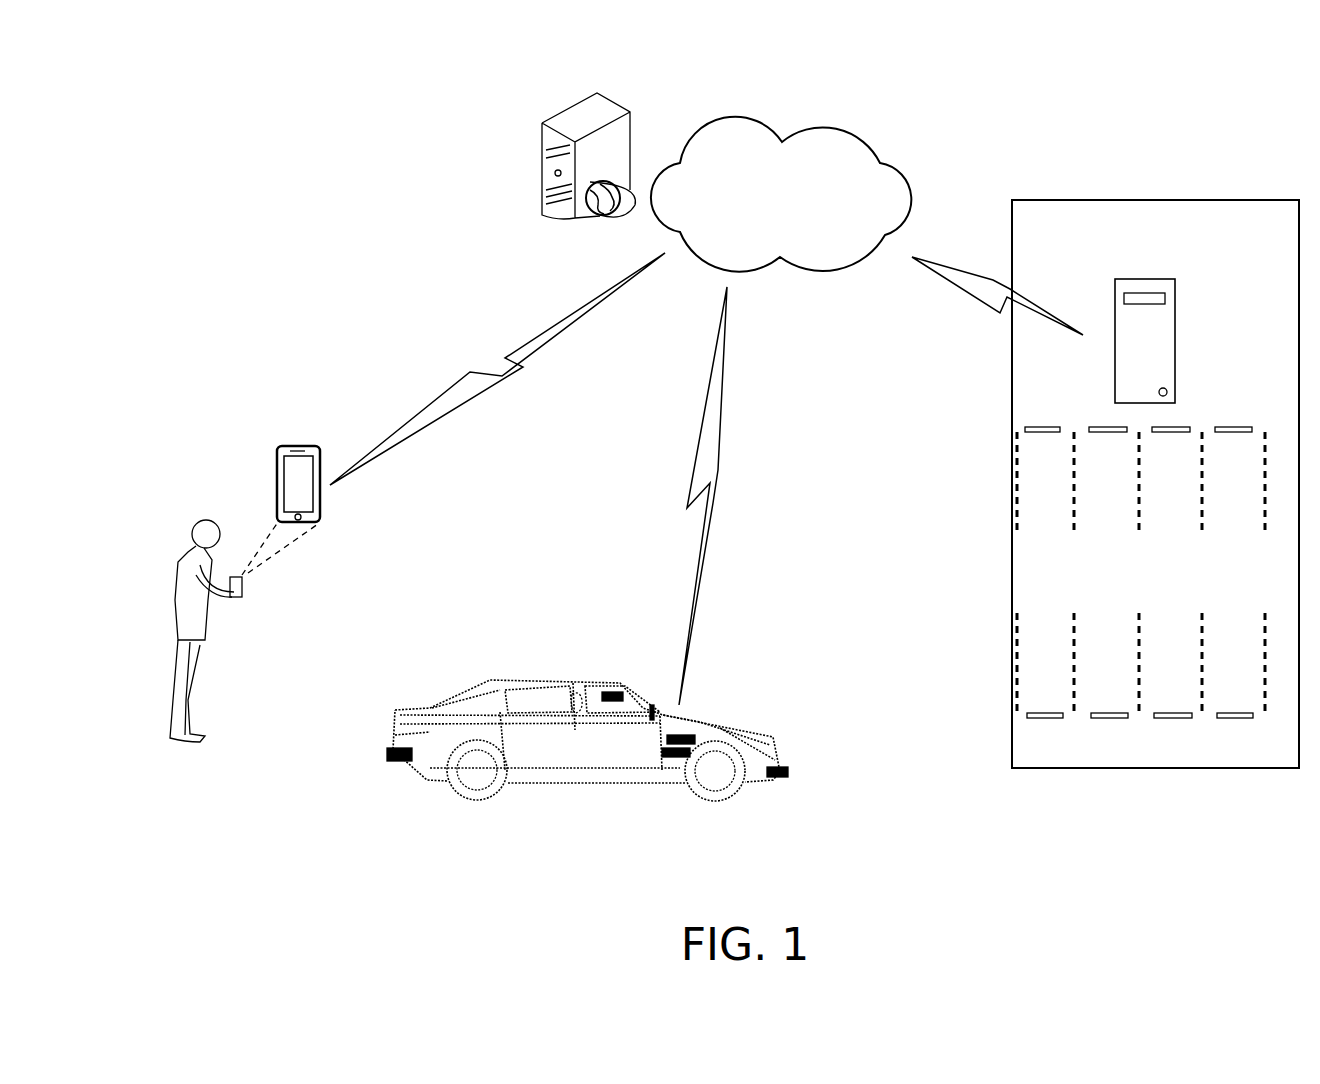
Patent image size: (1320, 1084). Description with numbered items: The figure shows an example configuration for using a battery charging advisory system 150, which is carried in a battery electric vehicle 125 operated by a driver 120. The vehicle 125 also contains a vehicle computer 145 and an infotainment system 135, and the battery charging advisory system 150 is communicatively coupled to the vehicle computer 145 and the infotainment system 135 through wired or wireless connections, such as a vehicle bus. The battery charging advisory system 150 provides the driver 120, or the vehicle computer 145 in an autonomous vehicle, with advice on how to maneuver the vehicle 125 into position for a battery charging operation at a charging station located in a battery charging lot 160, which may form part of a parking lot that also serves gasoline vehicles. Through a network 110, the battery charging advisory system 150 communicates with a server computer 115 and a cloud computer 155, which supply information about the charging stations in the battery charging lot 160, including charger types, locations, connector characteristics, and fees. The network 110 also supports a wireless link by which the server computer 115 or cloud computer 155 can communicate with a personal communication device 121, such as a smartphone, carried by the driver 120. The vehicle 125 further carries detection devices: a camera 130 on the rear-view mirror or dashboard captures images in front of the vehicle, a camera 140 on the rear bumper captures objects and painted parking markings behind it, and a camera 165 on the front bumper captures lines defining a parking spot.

The network 110 is at (859, 173).
The server computer 115 is at (1175, 343).
The driver 120 is at (150, 562).
The personal communication device 121 is at (276, 488).
The battery electric vehicle 125 is at (440, 670).
The camera 130 is at (616, 688).
The infotainment system 135 is at (653, 702).
The camera 140 is at (383, 758).
The vehicle computer 145 is at (660, 742).
The battery charging advisory system 150 is at (675, 760).
The cloud computer 155 is at (545, 100).
The battery charging lot 160 is at (1287, 236).
The camera 165 is at (785, 762).